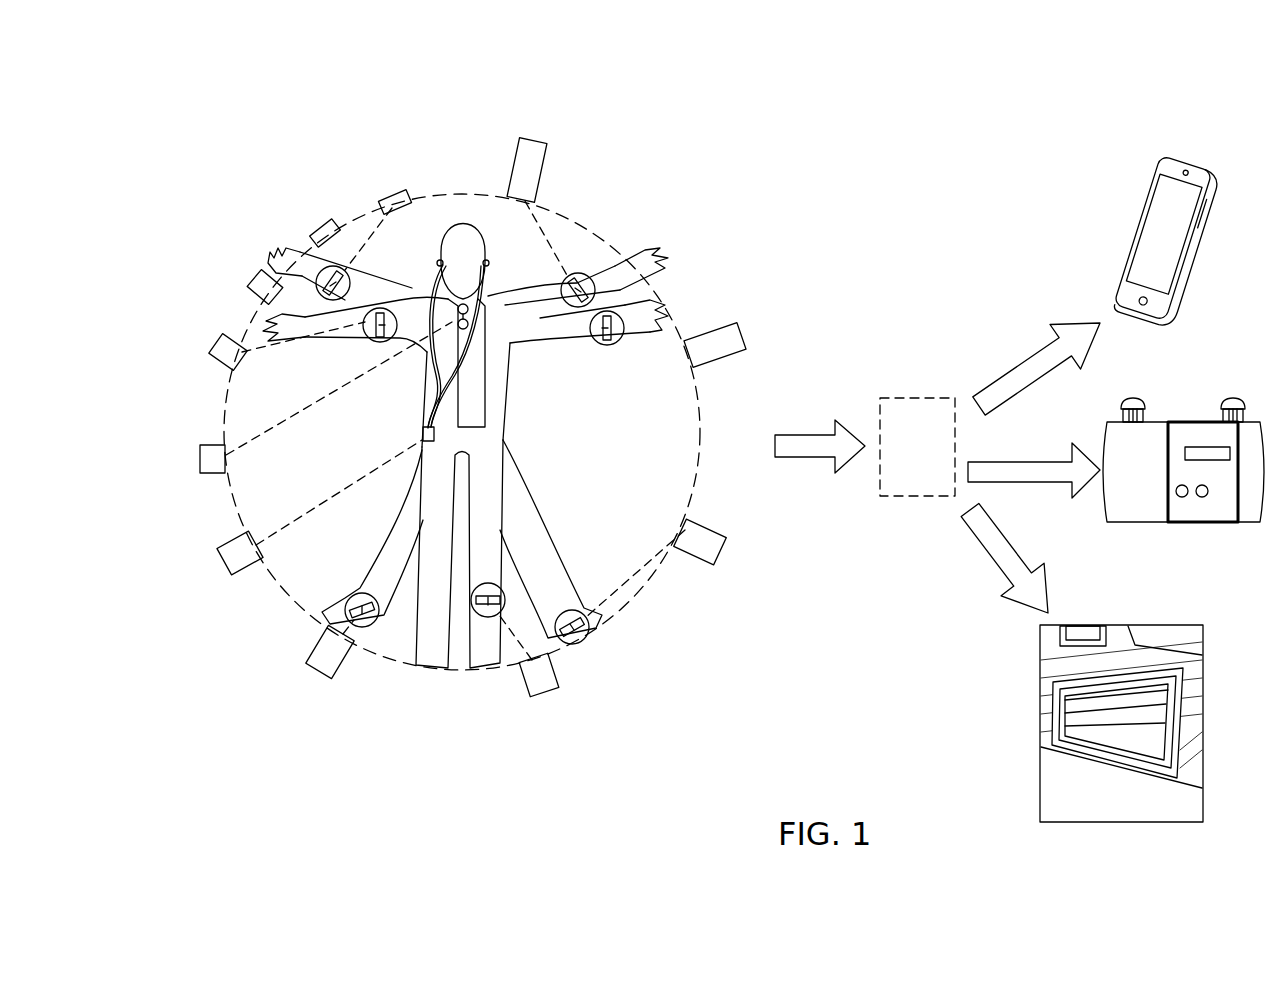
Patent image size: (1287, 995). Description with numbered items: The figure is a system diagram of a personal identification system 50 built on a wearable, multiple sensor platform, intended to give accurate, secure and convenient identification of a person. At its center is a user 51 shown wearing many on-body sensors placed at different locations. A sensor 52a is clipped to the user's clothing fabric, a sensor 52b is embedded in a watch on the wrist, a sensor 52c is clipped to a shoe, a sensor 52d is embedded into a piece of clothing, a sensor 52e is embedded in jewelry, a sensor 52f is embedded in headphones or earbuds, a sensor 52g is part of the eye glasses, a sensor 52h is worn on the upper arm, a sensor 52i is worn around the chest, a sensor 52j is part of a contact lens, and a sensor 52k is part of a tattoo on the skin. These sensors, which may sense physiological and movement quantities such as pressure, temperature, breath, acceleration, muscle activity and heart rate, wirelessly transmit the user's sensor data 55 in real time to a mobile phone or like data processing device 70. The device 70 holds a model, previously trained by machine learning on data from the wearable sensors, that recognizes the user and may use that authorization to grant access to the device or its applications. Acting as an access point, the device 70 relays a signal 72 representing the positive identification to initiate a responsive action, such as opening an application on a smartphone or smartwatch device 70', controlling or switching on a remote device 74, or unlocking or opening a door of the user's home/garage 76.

The personal identification system 50 is at (826, 83).
The user 51 is at (548, 430).
The sensor 52a is at (538, 143).
The sensor 52b is at (748, 338).
The sensor 52c is at (722, 562).
The sensor 52d is at (542, 695).
The sensor 52e is at (327, 673).
The sensor 52f is at (225, 557).
The sensor 52g is at (200, 462).
The sensor 52h is at (212, 356).
The sensor 52i is at (254, 283).
The sensor 52j is at (318, 226).
The sensor 52k is at (397, 195).
The sensor data 55 is at (808, 435).
The data processing device 70 is at (917, 425).
The smartphone or smartwatch device 70' is at (1166, 221).
The signal 72 is at (1025, 365).
The remote device 74 is at (1236, 398).
The home/garage 76 is at (1205, 684).